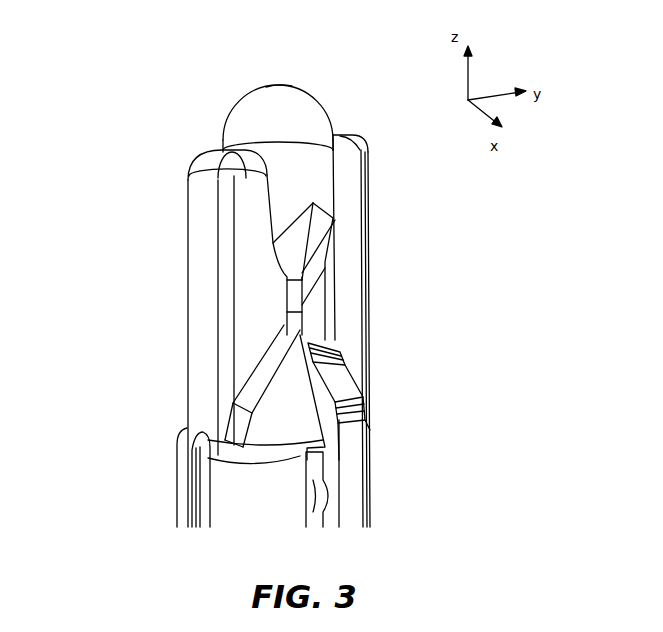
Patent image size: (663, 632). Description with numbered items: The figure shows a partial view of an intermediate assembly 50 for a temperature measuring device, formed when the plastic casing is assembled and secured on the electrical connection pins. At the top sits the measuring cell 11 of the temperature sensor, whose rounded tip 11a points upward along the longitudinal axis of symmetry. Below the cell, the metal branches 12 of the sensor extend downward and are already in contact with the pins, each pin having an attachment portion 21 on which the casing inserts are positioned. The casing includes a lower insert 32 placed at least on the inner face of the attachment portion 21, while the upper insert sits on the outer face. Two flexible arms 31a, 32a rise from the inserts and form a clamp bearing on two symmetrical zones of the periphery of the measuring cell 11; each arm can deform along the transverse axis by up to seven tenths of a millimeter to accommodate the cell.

The measuring cell 11 is at (267, 145).
The tip of cap 11a is at (267, 83).
The metal branches 12 is at (295, 328).
The attachment portion 21 is at (350, 467).
The flexible arm 31a is at (348, 258).
The lower insert 32 is at (232, 508).
The flexible arm 32a is at (195, 275).
The intermediate assembly 50 is at (497, 293).